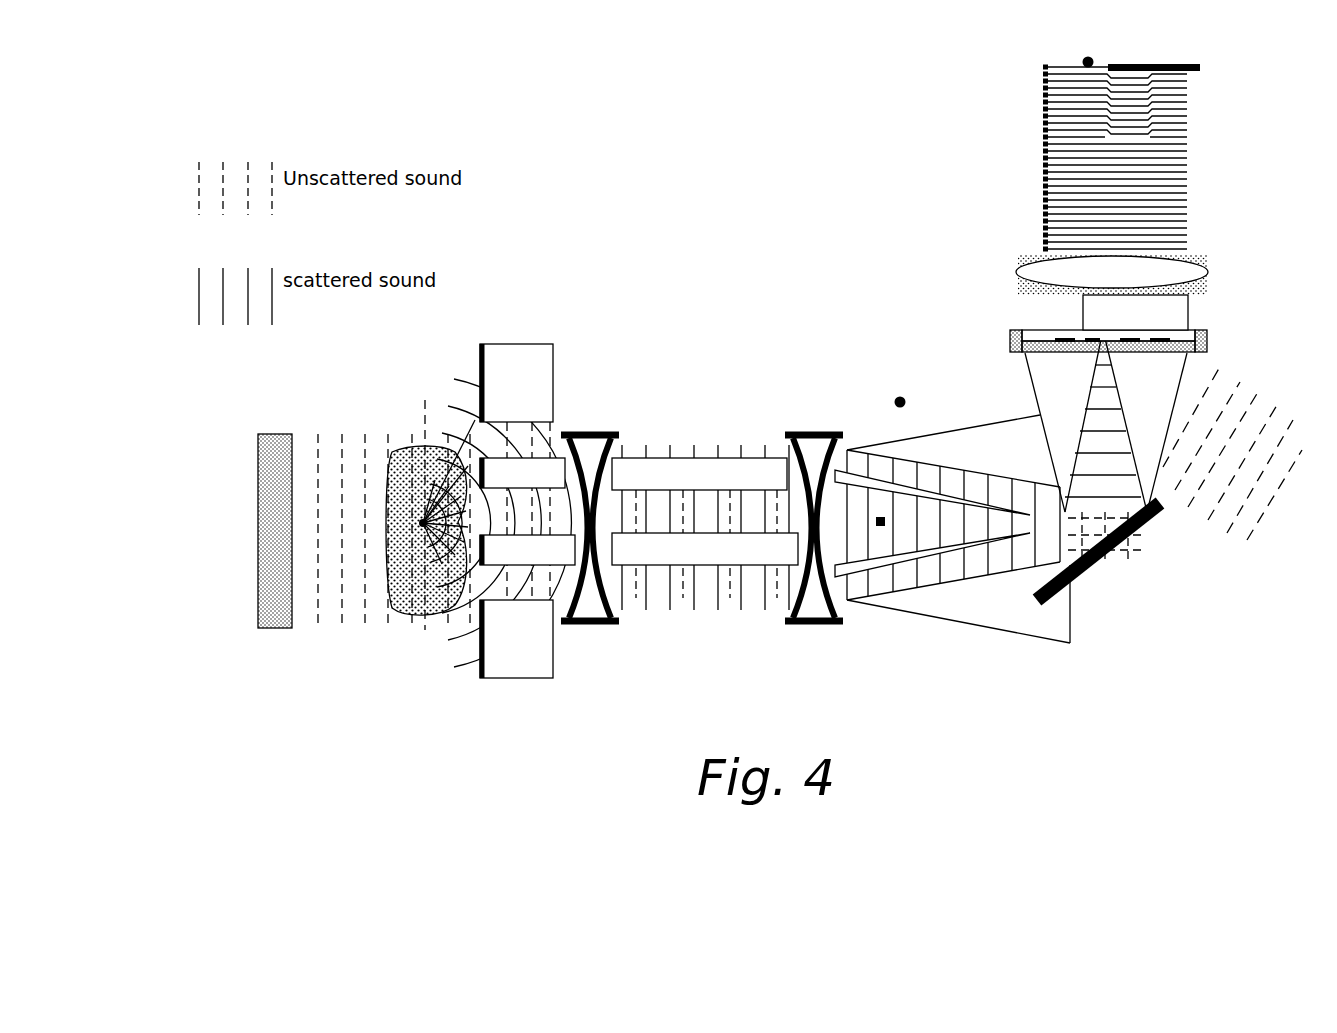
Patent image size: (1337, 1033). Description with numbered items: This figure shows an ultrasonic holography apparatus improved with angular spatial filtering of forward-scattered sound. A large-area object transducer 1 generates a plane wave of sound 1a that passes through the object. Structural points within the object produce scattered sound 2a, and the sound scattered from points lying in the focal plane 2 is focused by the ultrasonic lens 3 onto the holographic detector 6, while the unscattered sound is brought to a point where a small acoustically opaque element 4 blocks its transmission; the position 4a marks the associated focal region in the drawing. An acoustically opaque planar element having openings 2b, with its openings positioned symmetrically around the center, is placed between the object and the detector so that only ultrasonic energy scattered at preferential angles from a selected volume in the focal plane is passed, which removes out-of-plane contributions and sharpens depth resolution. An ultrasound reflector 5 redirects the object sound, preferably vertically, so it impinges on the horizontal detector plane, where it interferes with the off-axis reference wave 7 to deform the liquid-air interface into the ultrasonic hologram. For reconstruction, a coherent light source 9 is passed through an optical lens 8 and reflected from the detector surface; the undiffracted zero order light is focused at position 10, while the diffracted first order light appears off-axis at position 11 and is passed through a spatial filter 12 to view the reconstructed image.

The object transducer 1 is at (275, 551).
The plane wave of sound 1a is at (326, 425).
The focal plane 2 is at (478, 523).
The scattered sound 2a is at (503, 398).
The acoustically opaque planar element having openings 2b is at (495, 691).
The ultrasonic lens 3 is at (702, 548).
The acoustically opaque element 4 is at (883, 552).
The focal point of unscattered sound 4a is at (885, 488).
The ultrasound reflector 5 is at (1098, 551).
The holographic detector 6 is at (1215, 340).
The reference wave 7 is at (1232, 451).
The optical lens 8 is at (1121, 289).
The coherent light source 9 is at (1080, 60).
The zero order light position 10 is at (1154, 54).
The first order image position 11 is at (1115, 88).
The spatial filter 12 is at (1131, 158).